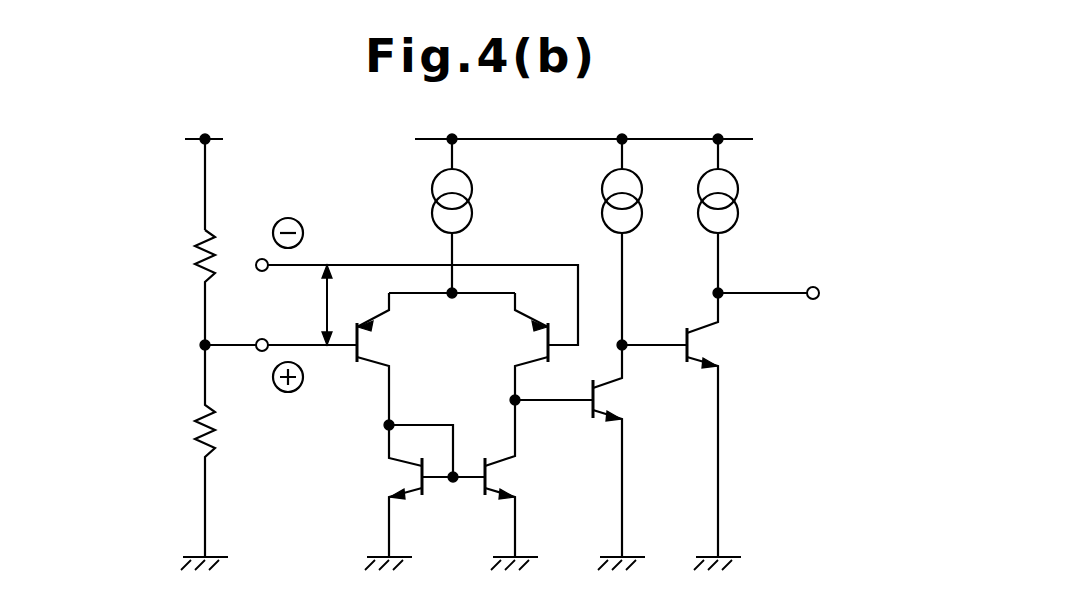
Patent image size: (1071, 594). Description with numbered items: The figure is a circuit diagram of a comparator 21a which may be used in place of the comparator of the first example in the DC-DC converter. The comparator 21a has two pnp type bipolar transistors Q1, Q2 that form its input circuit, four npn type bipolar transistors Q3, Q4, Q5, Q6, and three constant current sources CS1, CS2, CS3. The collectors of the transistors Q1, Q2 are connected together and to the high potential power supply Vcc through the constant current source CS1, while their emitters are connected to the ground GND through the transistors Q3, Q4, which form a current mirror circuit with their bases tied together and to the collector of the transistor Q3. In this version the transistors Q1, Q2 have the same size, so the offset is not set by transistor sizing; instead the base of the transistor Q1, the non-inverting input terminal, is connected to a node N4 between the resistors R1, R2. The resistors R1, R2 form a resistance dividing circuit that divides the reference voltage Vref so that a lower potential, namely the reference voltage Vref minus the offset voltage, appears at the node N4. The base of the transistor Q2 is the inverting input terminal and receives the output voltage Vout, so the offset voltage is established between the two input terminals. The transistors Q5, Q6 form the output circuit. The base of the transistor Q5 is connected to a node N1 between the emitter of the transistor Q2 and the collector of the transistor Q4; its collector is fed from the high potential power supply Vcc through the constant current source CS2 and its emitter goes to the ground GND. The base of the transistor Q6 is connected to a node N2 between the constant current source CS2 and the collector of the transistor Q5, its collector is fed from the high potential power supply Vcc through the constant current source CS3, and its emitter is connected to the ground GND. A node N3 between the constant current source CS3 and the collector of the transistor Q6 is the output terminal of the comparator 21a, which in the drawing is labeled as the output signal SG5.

The comparator 21a is at (812, 108).
The high potential power supply Vcc is at (549, 139).
The reference voltage Vref is at (159, 177).
The output voltage Vout is at (414, 284).
The resistor R1 is at (205, 240).
The resistor R2 is at (205, 424).
The node N4 is at (201, 338).
The constant current source CS1 is at (469, 174).
The constant current source CS2 is at (633, 170).
The constant current source CS3 is at (737, 186).
The pnp type bipolar transistor Q1 is at (363, 333).
The pnp type bipolar transistor Q2 is at (552, 333).
The npn type bipolar transistor Q3 is at (400, 475).
The npn type bipolar transistor Q4 is at (508, 475).
The npn type bipolar transistor Q5 is at (612, 388).
The npn type bipolar transistor Q6 is at (707, 333).
The node N1 is at (520, 405).
The node N2 is at (628, 344).
The node N3 is at (720, 291).
The output signal SG5 is at (846, 293).
The ground GND is at (474, 548).